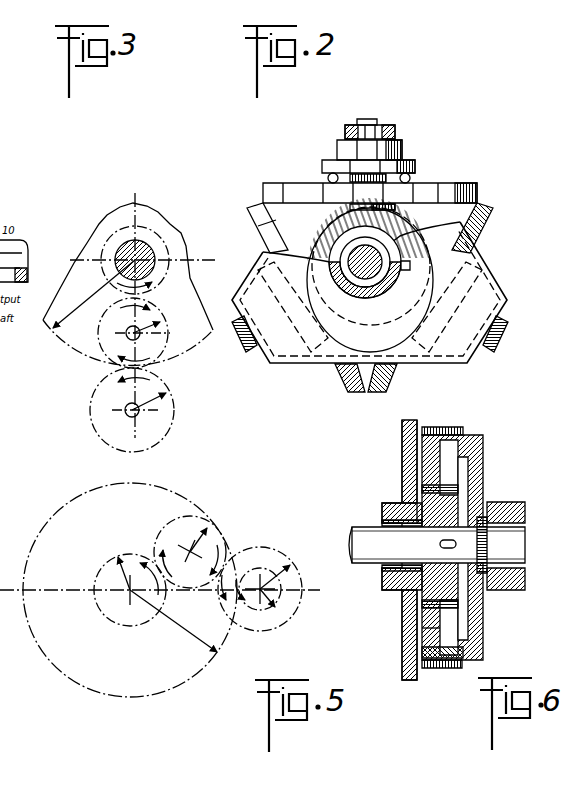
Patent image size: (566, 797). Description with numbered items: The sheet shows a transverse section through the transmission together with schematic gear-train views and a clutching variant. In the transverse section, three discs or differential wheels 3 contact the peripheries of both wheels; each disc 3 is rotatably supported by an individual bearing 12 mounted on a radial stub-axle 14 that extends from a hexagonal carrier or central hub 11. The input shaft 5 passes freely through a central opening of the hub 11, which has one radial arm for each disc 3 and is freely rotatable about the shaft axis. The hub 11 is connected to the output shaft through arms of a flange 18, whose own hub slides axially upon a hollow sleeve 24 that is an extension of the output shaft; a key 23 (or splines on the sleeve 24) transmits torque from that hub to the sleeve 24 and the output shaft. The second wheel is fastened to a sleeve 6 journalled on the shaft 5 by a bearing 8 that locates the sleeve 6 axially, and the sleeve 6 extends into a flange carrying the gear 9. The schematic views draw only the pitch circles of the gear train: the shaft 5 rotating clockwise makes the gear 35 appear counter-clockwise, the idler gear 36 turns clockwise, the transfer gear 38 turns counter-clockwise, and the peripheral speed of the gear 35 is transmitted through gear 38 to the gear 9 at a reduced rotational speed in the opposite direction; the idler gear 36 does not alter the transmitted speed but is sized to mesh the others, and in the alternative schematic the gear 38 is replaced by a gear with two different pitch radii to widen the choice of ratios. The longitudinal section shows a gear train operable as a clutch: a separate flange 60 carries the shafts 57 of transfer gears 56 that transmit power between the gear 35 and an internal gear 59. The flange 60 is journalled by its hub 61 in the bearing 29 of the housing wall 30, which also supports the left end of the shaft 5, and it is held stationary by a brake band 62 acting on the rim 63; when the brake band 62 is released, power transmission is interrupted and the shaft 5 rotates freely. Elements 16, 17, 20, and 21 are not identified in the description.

In FIG. 2, the discs or differential wheels 3 is at (297, 190).
In FIG. 3, the input shaft 5 is at (142, 256).
In FIG. 6, the input shaft 5 is at (365, 527).
In FIG. 6, the sleeve 6 is at (520, 503).
In FIG. 6, the bearing 8 is at (487, 517).
In FIG. 3, the gear 9 is at (62, 306).
In FIG. 5, the gear 9 is at (183, 630).
In FIG. 2, the hexagonal carrier or central hub 11 is at (400, 232).
In FIG. 2, the bearing 12 is at (350, 206).
In FIG. 2, the radial stub-axle 14 is at (385, 220).
In FIG. 2, the plate 16 is at (417, 173).
In FIG. 2, the block 17 is at (404, 155).
In FIG. 2, the flange 18 is at (322, 364).
In FIG. 2, the nut 20 is at (396, 130).
In FIG. 2, the cap 21 is at (372, 122).
In FIG. 2, the key 23 is at (412, 264).
In FIG. 2, the hollow sleeve 24 is at (352, 295).
In FIG. 6, the bearing 29 is at (382, 508).
In FIG. 6, the housing wall 30 is at (402, 455).
In FIG. 3, the gear 35 is at (155, 245).
In FIG. 5, the gear 35 is at (110, 572).
In FIG. 6, the gear 35 is at (455, 580).
In FIG. 3, the idler gear 36 is at (168, 328).
In FIG. 5, the idler gear 36 is at (213, 528).
In FIG. 3, the transfer gear 38 is at (178, 395).
In FIG. 5, the transfer gear 38 is at (282, 562).
In FIG. 6, the transfer gears 56 is at (455, 470).
In FIG. 6, the shafts 57 is at (468, 484).
In FIG. 6, the internal gear 59 is at (463, 443).
In FIG. 6, the flange 60 is at (440, 628).
In FIG. 6, the hub 61 is at (382, 572).
In FIG. 6, the brake band 62 is at (442, 668).
In FIG. 6, the rim 63 is at (464, 654).